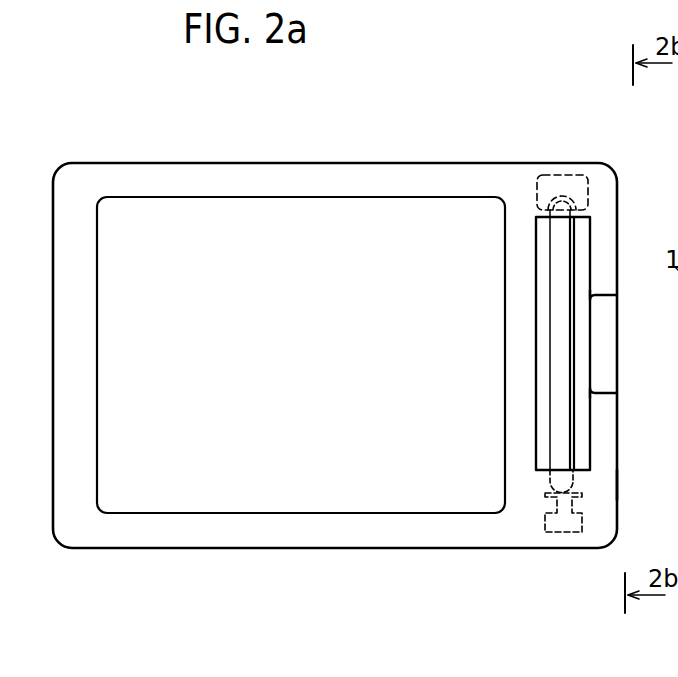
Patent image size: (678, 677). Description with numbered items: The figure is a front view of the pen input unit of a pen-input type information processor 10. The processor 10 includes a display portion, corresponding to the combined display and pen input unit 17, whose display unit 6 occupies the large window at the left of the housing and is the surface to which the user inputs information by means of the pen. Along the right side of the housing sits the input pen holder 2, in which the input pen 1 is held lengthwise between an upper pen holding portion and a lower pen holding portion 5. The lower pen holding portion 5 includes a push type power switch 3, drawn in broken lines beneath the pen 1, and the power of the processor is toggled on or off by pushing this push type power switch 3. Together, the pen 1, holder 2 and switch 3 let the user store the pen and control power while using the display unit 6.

The pen-input type information processor 10 is at (393, 108).
The display and pen input unit 17 is at (119, 549).
The display unit 6 is at (192, 232).
The input pen 1 is at (555, 258).
The input pen holder 2 is at (603, 349).
The push type power switch 3 is at (548, 524).
The lower pen holding portion 5 is at (677, 498).